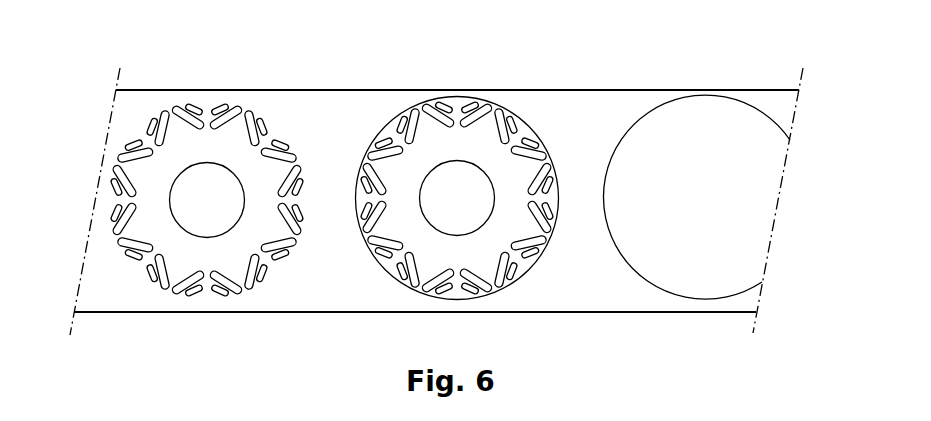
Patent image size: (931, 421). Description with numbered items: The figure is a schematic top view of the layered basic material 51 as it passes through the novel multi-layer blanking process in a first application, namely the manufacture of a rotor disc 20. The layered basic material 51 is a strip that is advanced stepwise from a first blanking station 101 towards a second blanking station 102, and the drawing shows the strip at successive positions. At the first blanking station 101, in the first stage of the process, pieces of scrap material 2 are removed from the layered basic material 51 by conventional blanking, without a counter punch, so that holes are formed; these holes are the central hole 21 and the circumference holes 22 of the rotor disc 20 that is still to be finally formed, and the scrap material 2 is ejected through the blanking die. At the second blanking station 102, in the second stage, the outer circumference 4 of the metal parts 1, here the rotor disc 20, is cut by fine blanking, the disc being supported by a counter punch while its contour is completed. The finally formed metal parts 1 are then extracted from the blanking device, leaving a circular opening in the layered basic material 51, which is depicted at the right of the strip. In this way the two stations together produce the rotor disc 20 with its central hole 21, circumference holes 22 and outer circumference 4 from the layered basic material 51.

The layered basic material 51 is at (107, 303).
The first blanking station 101 is at (207, 194).
The second blanking station 102 is at (457, 197).
The scrap material 2 is at (195, 217).
The metal parts 1 is at (457, 226).
The rotor disc 20 is at (457, 226).
The outer circumference 4 is at (413, 291).
The central hole 21 is at (473, 212).
The circumference holes 22 is at (478, 285).